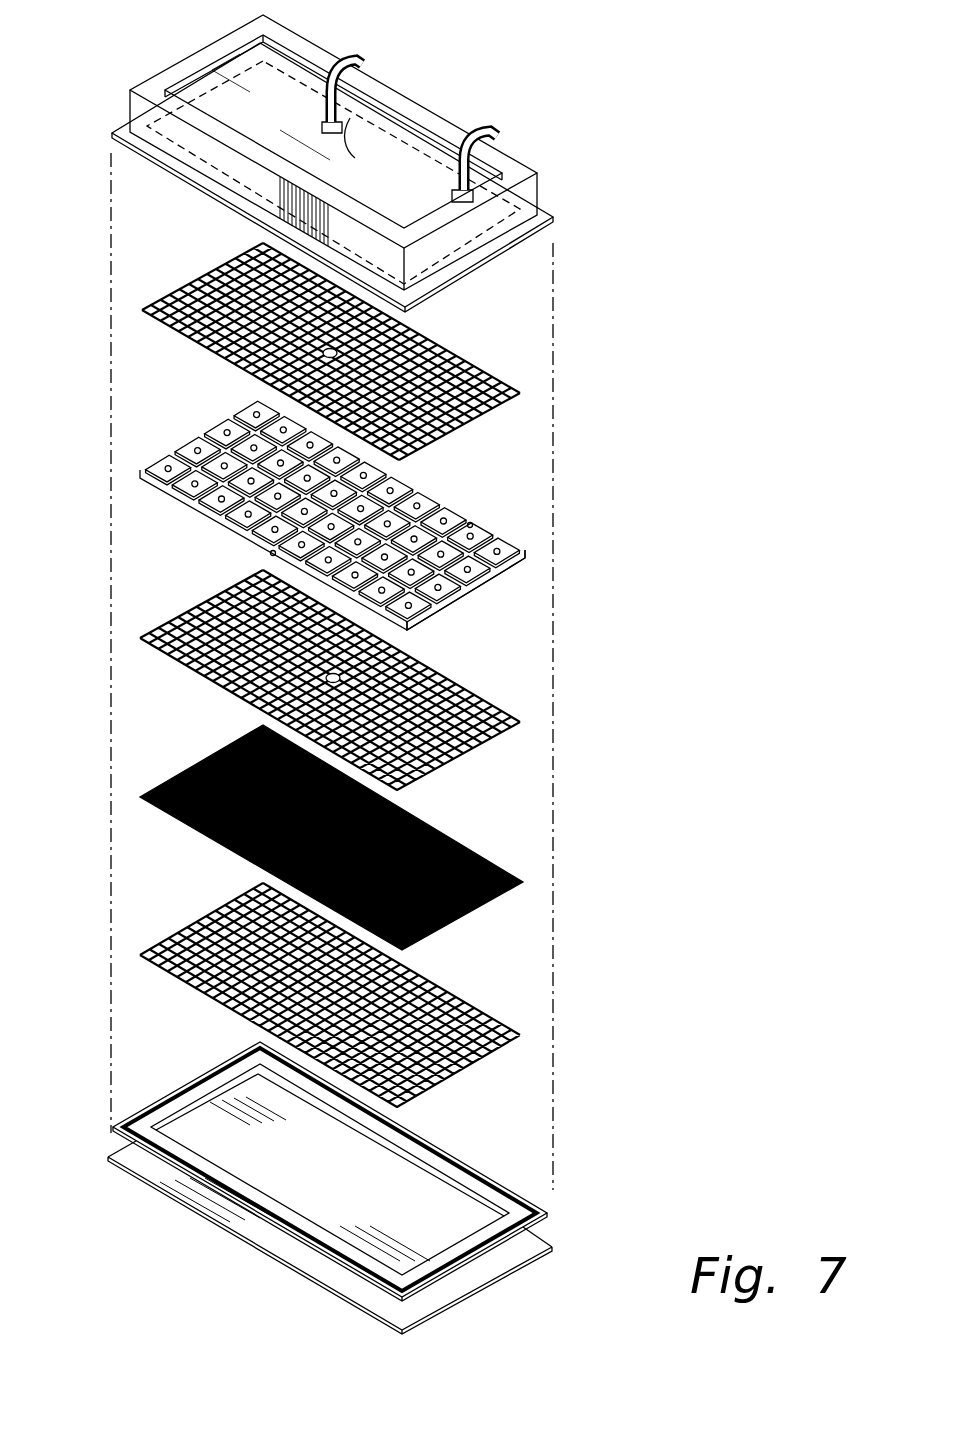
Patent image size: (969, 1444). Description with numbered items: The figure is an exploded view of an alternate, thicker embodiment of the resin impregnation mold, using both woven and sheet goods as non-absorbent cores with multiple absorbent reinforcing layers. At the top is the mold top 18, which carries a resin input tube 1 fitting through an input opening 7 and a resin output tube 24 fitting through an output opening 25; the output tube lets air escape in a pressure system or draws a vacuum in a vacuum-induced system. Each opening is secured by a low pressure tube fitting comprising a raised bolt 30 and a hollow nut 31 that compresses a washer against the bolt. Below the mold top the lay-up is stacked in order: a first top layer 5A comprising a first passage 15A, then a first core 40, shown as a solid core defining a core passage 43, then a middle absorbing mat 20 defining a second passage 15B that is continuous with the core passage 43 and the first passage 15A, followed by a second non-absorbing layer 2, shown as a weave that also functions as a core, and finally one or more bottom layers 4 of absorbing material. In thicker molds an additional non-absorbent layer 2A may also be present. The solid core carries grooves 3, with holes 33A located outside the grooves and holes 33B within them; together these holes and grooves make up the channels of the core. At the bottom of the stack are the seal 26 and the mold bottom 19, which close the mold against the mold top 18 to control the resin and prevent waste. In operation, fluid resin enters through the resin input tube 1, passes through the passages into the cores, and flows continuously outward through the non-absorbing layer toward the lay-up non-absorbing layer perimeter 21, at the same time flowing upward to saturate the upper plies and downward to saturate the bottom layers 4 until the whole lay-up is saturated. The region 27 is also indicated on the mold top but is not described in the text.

The resin input tube 1 is at (362, 62).
The non-absorbing layer 2 is at (480, 850).
The non-absorbent layer 2A is at (365, 519).
The grooves 3 is at (482, 593).
The bottom layers of absorbing material 4 is at (482, 1018).
The first top layer 5A is at (477, 363).
The input opening 7 is at (342, 137).
The first passage 15A is at (340, 348).
The second passage 15B is at (340, 677).
The mold top 18 is at (540, 192).
The mold bottom 19 is at (130, 1172).
The middle absorbing mat 20 is at (478, 687).
The lay-up non-absorbing layer perimeter 21 is at (198, 105).
The resin output tube 24 is at (492, 133).
The output opening 25 is at (502, 167).
The seal 26 is at (473, 1160).
The rim corner 27 is at (229, 75).
The raised bolt 30 is at (498, 262).
The hollow nut 31 is at (350, 118).
The holes 33A is at (437, 508).
The holes 33B is at (210, 517).
The first core 40 is at (470, 525).
The core passage 43 is at (273, 553).